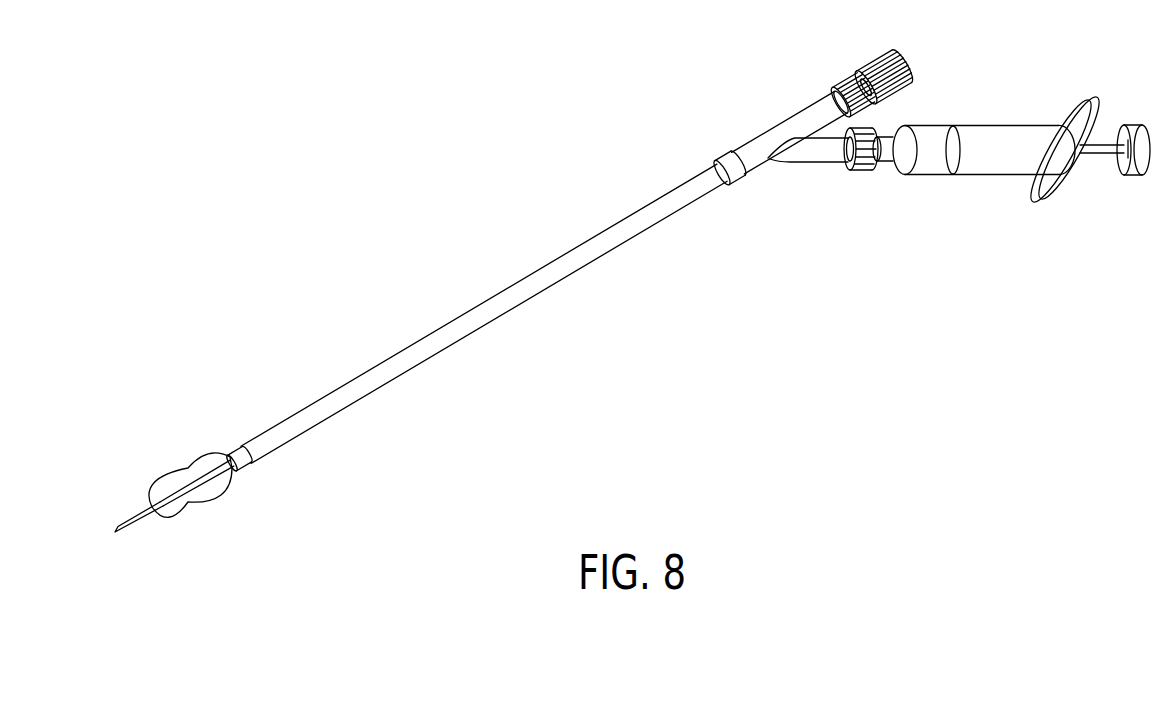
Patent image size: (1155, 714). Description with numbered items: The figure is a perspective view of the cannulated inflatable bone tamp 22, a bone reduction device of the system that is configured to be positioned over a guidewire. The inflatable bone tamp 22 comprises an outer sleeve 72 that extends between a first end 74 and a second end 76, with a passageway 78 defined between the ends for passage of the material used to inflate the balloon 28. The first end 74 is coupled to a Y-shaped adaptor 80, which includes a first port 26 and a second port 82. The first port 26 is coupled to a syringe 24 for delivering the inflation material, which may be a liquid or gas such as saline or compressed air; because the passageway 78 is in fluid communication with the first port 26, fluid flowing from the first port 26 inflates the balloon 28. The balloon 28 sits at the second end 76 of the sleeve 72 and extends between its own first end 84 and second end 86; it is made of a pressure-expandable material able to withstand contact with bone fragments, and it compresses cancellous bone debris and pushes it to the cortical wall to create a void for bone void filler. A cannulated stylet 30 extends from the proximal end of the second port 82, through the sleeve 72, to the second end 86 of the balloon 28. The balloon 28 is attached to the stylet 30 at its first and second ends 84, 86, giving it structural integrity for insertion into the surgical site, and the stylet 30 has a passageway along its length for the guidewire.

The cannulated inflatable bone tamp 22 is at (461, 222).
The syringe 24 is at (1076, 183).
The first port 26 is at (812, 163).
The balloon 28 is at (152, 476).
The cannulated stylet 30 is at (186, 468).
The outer sleeve 72 is at (352, 403).
The first end 74 is at (731, 184).
The second end 76 is at (277, 423).
The passageway 78 is at (905, 66).
The Y-shaped adaptor 80 is at (935, 90).
The second port 82 is at (787, 117).
The first end 84 is at (237, 468).
The second end 86 is at (155, 520).